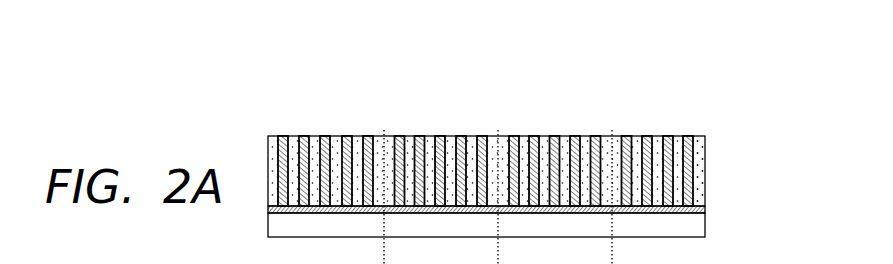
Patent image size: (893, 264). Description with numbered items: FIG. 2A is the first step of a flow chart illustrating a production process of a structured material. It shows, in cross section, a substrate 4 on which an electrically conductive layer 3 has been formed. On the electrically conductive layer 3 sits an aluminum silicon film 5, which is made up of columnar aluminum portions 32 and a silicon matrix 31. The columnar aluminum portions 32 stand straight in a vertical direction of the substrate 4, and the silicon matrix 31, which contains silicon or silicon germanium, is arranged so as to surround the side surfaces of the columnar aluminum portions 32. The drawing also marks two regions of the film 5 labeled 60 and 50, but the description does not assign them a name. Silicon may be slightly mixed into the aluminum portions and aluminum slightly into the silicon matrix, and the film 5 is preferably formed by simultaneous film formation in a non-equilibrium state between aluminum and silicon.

The aluminum silicon film 5 is at (715, 137).
The silicon matrix 31 is at (700, 158).
The columnar aluminum portions 32 is at (647, 135).
The second region 60 is at (384, 130).
The first region 50 is at (612, 130).
The electrically conductive layer 3 is at (698, 207).
The substrate 4 is at (693, 227).